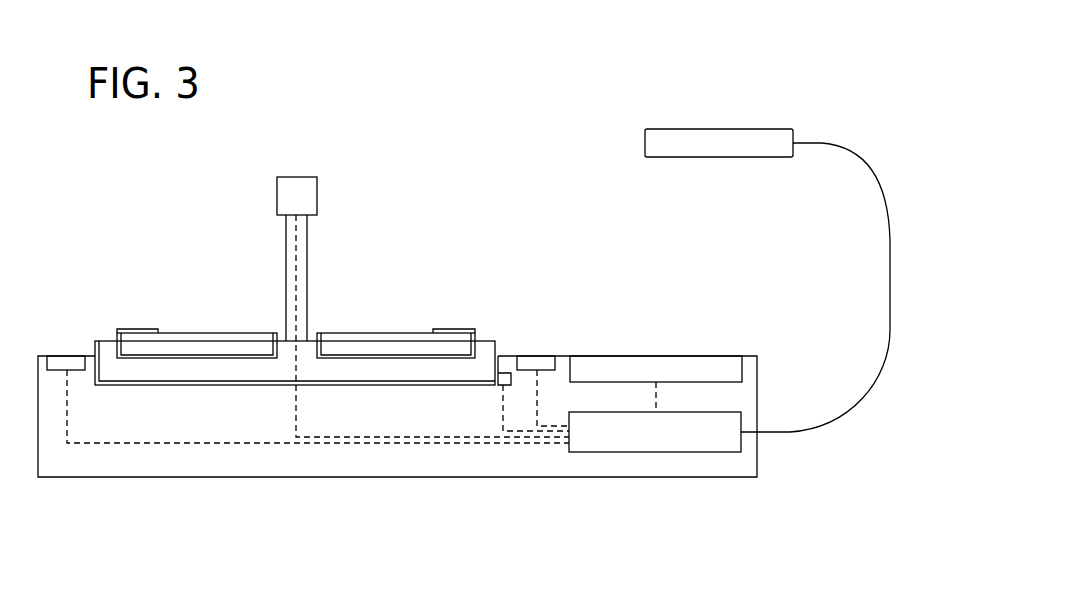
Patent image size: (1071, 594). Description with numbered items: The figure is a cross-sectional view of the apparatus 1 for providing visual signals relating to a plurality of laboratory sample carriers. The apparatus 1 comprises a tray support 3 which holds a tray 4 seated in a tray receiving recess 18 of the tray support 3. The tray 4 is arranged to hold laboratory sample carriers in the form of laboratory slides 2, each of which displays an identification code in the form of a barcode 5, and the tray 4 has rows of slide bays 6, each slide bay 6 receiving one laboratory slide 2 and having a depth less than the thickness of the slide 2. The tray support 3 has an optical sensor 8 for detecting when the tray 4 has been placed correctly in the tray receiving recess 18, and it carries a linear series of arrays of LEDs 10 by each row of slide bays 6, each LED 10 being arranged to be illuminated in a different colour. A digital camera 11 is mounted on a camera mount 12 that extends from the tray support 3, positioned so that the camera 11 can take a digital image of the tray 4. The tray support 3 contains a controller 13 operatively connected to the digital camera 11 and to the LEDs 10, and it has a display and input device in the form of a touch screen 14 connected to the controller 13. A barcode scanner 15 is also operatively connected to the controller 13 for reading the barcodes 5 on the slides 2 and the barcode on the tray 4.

The apparatus 1 is at (464, 305).
The laboratory slide 2 is at (232, 320).
The tray support 3 is at (180, 498).
The tray 4 is at (103, 341).
The barcode 5 is at (138, 329).
The slide bay 6 is at (243, 358).
The optical sensor 8 is at (503, 373).
The LED 10 is at (72, 356).
The digital camera 11 is at (306, 177).
The camera mount 12 is at (286, 267).
The controller 13 is at (662, 452).
The touch screen 14 is at (678, 363).
The barcode scanner 15 is at (737, 129).
The tray receiving recess 18 is at (108, 385).